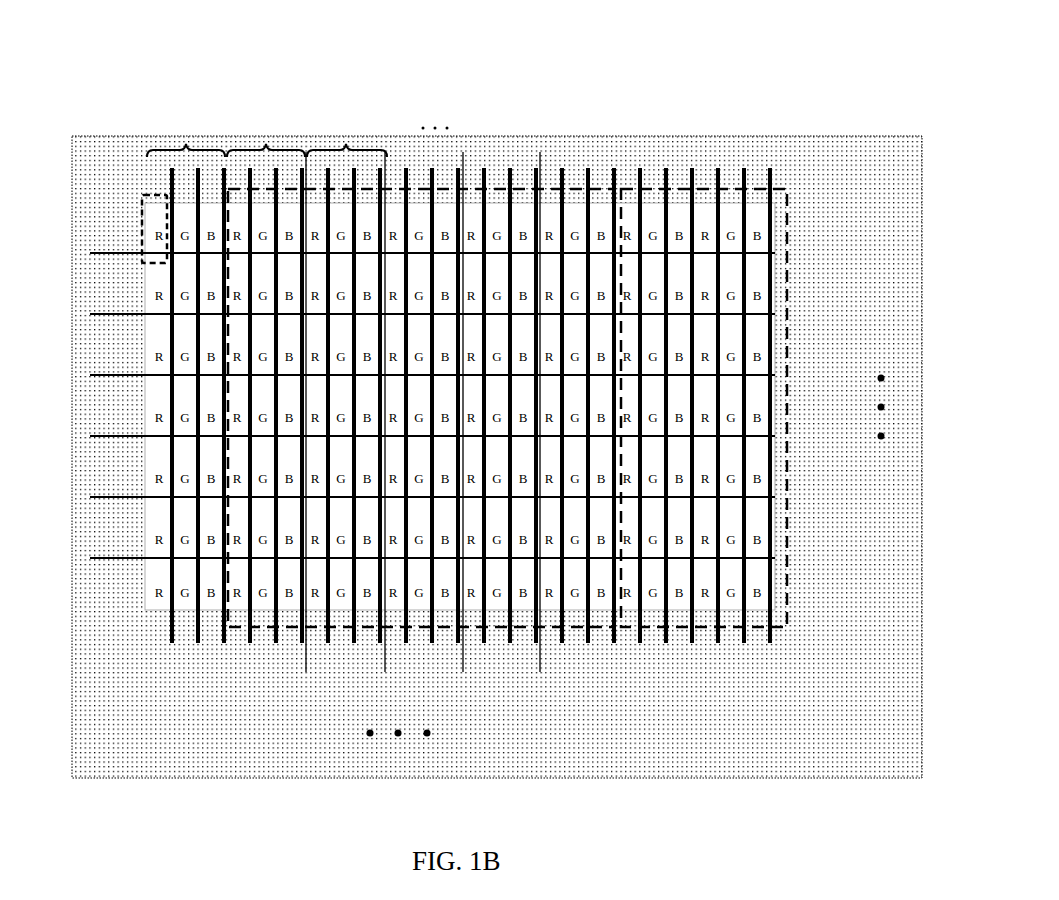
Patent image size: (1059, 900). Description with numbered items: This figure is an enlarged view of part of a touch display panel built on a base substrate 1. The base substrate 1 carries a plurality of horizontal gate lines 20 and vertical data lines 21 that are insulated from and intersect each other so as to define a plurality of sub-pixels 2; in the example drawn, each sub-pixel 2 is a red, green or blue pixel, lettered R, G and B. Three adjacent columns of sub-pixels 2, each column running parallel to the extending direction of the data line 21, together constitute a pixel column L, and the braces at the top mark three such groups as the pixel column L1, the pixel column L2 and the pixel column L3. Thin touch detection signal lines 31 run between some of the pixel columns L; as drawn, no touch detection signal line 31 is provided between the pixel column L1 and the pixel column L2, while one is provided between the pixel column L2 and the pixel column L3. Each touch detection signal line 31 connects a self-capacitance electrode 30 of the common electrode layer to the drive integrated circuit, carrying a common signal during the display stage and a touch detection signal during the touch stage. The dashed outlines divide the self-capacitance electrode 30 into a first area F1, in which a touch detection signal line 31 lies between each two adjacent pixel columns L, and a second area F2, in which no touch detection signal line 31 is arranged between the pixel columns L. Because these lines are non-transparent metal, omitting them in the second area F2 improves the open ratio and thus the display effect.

The base substrate 1 is at (583, 137).
The sub-pixel 2 is at (137, 223).
The gate line 20 is at (95, 252).
The data line 21 is at (172, 185).
The self-capacitance electrode 30 is at (667, 170).
The touch detection signal line 31 is at (463, 152).
The first area F1 is at (393, 632).
The second area F2 is at (667, 643).
The pixel column L is at (233, 108).
The first pixel column L1 is at (186, 137).
The second pixel column L2 is at (266, 134).
The third pixel column L3 is at (347, 137).